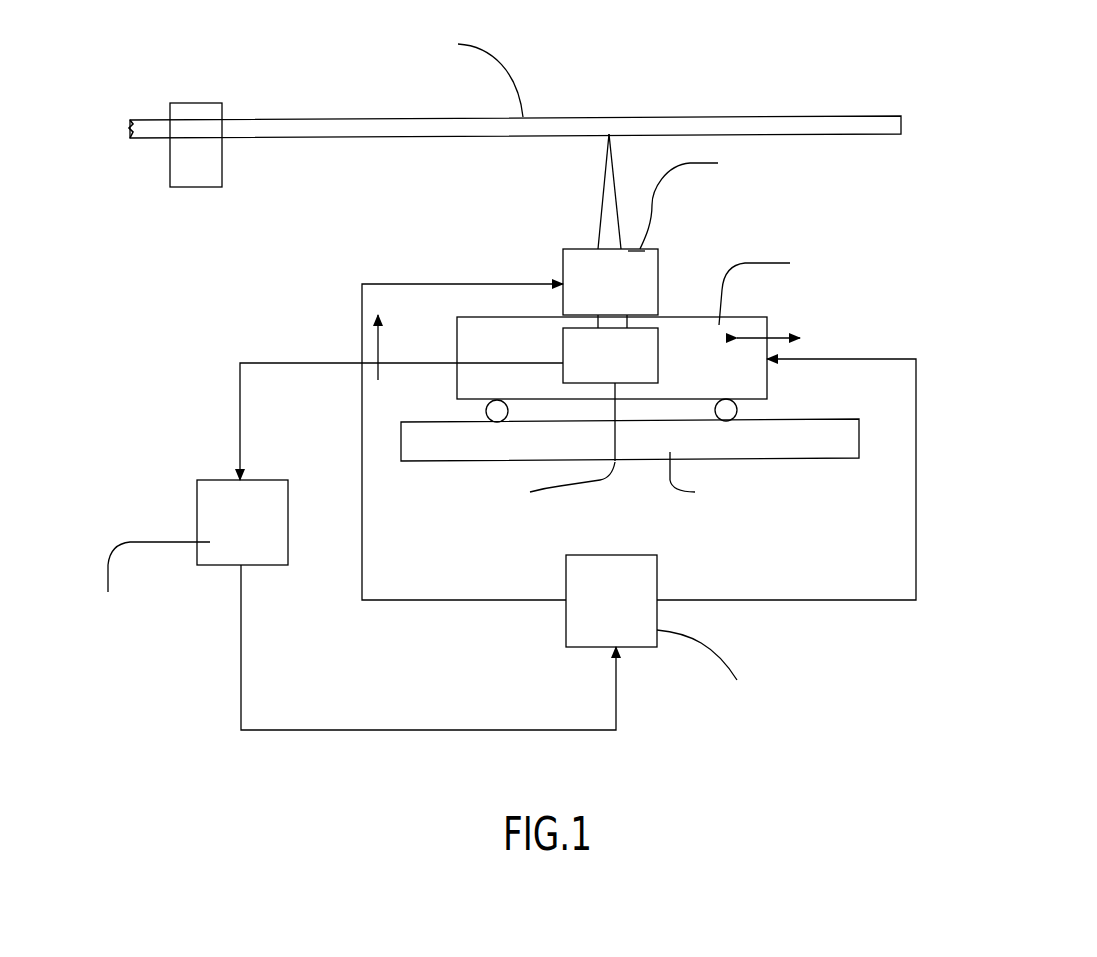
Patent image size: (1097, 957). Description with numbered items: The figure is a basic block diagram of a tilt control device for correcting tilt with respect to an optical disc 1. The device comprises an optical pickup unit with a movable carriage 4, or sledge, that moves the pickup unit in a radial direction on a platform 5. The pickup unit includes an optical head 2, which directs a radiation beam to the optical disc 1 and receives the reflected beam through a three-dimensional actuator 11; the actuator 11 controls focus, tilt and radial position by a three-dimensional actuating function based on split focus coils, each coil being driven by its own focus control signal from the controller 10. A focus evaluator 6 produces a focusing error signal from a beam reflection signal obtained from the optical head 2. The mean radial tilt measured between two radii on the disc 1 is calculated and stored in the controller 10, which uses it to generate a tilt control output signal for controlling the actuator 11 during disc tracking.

The optical disc 1 is at (750, 117).
The 3D actuator 11 is at (727, 240).
The optical head 2 is at (534, 427).
The movable carriage 4 is at (686, 330).
The platform 5 is at (630, 462).
The focus evaluator 6 is at (171, 563).
The controller 10 is at (696, 631).